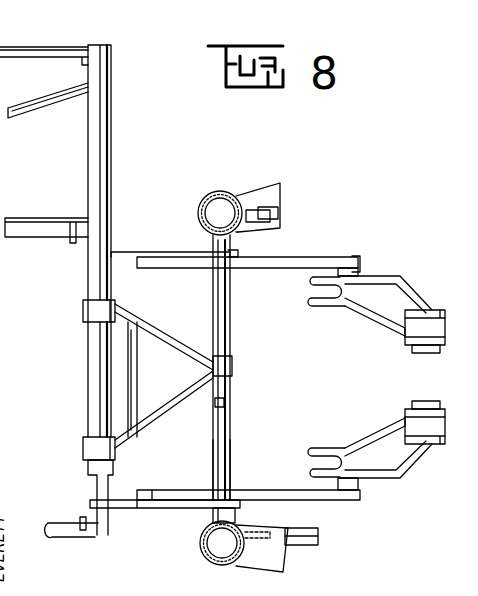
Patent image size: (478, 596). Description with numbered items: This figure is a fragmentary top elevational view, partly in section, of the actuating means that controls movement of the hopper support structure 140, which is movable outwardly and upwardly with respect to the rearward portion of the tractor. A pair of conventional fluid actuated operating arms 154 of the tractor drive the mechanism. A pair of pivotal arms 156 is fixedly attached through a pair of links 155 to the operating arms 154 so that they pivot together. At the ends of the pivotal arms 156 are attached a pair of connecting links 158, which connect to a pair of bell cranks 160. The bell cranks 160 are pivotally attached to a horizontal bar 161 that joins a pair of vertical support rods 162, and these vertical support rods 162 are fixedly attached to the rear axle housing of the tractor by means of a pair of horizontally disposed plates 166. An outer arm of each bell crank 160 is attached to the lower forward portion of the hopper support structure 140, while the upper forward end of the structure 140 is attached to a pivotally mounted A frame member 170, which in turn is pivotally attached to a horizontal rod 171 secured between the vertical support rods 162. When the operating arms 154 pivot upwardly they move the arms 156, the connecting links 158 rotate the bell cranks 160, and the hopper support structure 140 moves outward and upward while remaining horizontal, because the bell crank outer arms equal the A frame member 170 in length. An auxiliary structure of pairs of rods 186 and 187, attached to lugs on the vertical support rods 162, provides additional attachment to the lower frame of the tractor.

The hopper frame structure 140 is at (95, 128).
The fluid actuated operating arms 154 is at (370, 440).
The links 155 is at (335, 486).
The pivotal arms 156 is at (378, 477).
The connecting links 158 is at (270, 497).
The bell cranks 160 is at (172, 506).
The horizontal bar 161 is at (216, 462).
The vertical support rods 162 is at (215, 555).
The horizontally disposed plates 166 is at (268, 566).
The A frame member 170 is at (188, 330).
The horizontal rod 171 is at (220, 338).
The rods 186 is at (280, 216).
The rods 187 is at (305, 536).